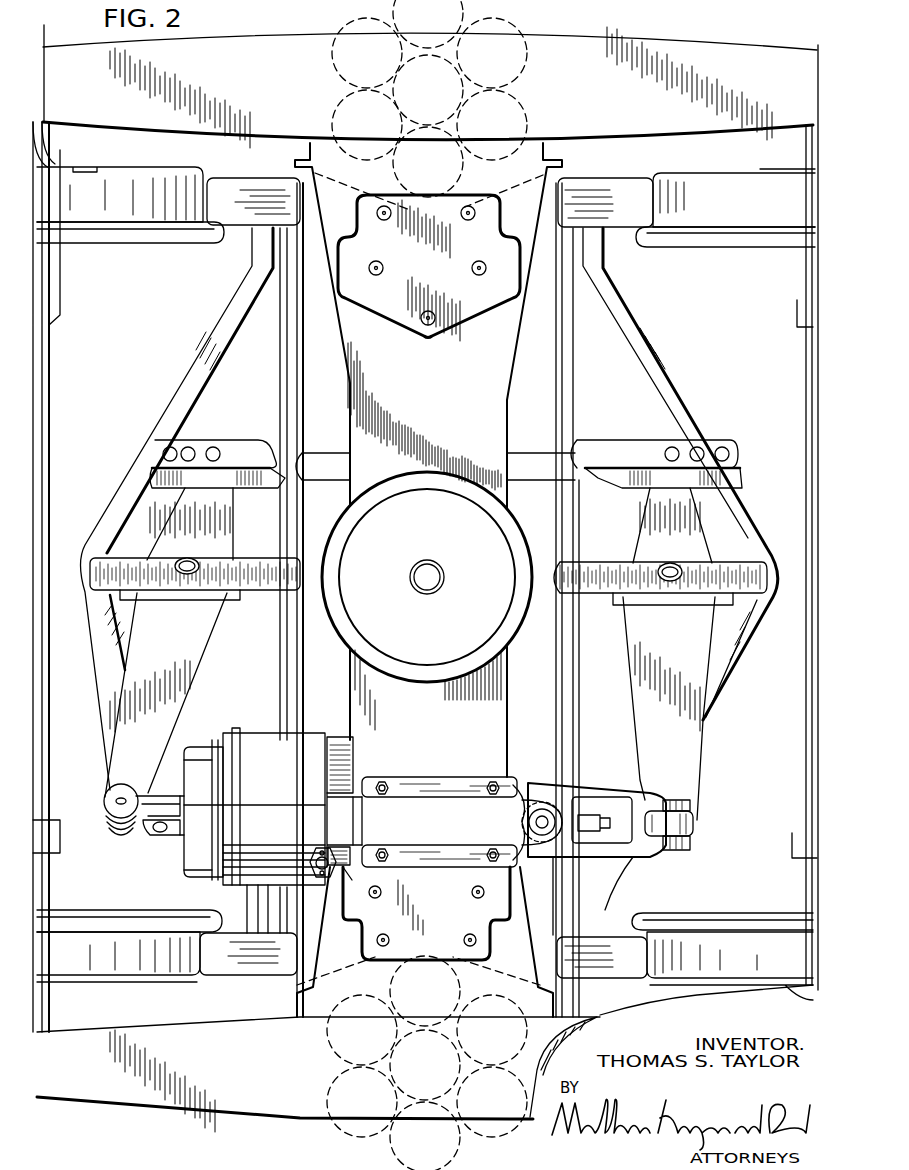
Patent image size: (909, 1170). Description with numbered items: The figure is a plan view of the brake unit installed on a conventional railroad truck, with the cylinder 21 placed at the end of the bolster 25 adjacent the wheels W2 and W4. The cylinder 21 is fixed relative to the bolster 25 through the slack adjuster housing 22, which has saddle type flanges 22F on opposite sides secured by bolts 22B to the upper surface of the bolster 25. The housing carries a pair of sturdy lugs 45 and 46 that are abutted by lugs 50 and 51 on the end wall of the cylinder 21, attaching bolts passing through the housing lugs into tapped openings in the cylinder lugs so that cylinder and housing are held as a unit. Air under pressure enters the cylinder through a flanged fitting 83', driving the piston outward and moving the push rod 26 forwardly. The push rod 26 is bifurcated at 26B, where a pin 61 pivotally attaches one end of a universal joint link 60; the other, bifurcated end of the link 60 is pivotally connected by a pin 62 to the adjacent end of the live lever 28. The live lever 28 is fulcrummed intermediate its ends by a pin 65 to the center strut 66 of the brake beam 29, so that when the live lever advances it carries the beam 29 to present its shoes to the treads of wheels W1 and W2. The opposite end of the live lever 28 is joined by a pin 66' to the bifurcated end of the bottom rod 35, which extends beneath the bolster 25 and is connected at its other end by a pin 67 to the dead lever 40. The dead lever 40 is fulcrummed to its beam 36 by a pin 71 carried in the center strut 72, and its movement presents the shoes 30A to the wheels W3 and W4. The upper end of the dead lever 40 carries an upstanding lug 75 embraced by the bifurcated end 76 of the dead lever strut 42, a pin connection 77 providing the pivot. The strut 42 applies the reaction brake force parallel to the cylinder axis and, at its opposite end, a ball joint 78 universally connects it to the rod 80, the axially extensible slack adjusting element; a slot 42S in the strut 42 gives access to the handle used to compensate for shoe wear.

The cylinder 21 is at (288, 769).
The slack adjuster housing 22 is at (426, 872).
The bolts 22B is at (383, 782).
The saddle type flanges 22F is at (478, 782).
The bolster 25 is at (468, 412).
The push rod 26 is at (183, 838).
The bifurcated end 26B is at (158, 834).
The live lever 28 is at (160, 662).
The beam 29 is at (180, 408).
The brake shoes 30A is at (580, 185).
The bottom rod 35 is at (330, 462).
The beam 36 is at (668, 380).
The dead lever 40 is at (688, 640).
The dead lever strut 42 is at (632, 850).
The slot 42S is at (612, 808).
The lug 45 is at (358, 782).
The lug 46 is at (378, 892).
The lug 50 is at (340, 770).
The lug 51 is at (340, 845).
The universal joint link 60 is at (160, 795).
The pin 61 is at (158, 830).
The pin 62 is at (120, 800).
The pin 65 is at (195, 562).
The center strut 66 is at (195, 597).
The pin 66' is at (216, 482).
The pin 67 is at (670, 452).
The pin 71 is at (665, 572).
The center strut 72 is at (590, 575).
The upstanding lug 75 is at (696, 826).
The bifurcated end 76 is at (690, 845).
The pin connection 77 is at (672, 800).
The ball joint 78 is at (550, 795).
The rod 80 is at (520, 780).
The flanged fitting 83' is at (318, 831).
The car wheel W1 is at (158, 213).
The car wheel W2 is at (150, 975).
The wheel W3 is at (768, 215).
The wheel W4 is at (718, 915).